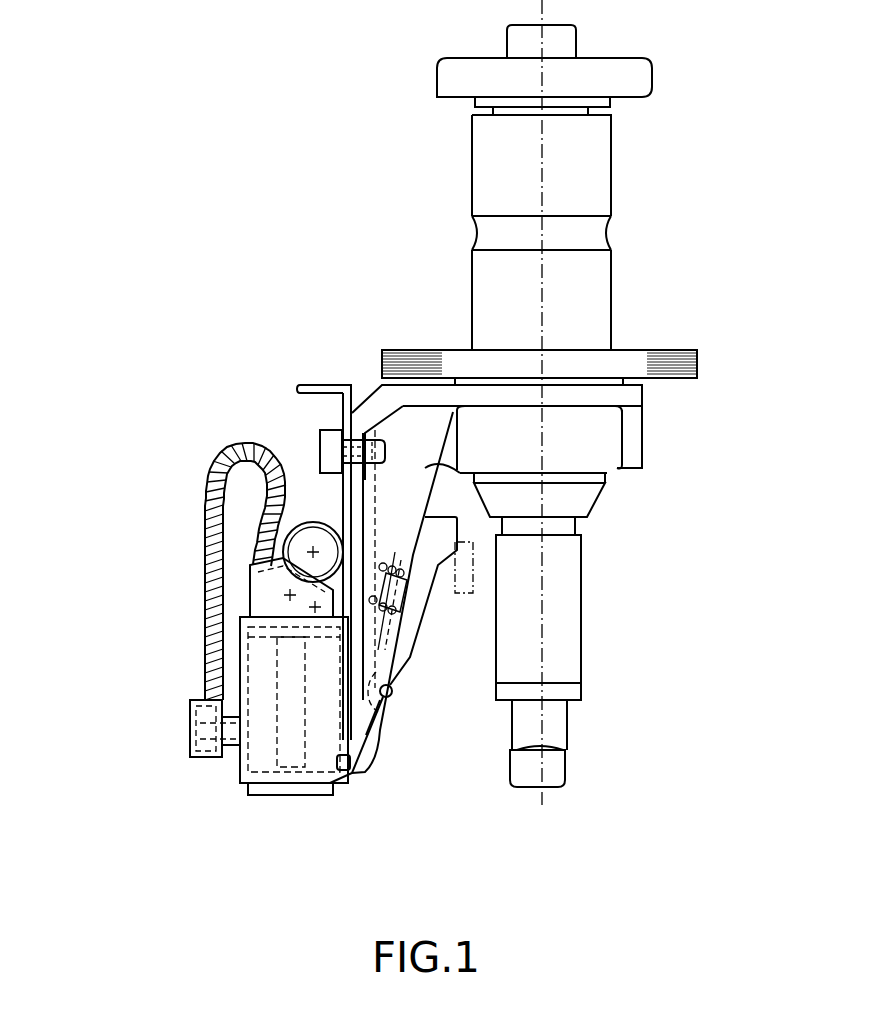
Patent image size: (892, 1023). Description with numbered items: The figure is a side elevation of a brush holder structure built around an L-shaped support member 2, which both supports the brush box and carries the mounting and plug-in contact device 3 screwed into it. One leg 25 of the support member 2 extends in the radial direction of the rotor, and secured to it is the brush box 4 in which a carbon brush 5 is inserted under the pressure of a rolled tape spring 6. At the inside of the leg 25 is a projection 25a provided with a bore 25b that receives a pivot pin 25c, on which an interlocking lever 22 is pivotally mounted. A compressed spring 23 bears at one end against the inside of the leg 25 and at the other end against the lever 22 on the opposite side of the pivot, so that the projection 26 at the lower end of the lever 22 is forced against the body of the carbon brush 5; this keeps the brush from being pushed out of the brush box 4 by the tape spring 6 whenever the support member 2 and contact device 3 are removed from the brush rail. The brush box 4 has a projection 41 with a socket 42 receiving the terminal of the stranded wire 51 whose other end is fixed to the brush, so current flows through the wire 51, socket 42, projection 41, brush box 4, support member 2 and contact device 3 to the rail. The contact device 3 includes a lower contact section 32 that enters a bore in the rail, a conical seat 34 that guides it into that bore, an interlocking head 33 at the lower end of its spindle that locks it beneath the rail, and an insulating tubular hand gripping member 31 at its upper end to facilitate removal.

The support member 2 is at (590, 428).
The plug-in contact device 3 is at (542, 285).
The hand gripping member 31 is at (497, 287).
The lower contact section 32 is at (565, 610).
The interlocking head 33 is at (550, 765).
The conical seat 34 is at (600, 500).
The brush box 4 is at (240, 643).
The projection 41 is at (233, 755).
The socket 42 is at (195, 707).
The carbon brush 5 is at (268, 772).
The stranded wire 51 is at (207, 497).
The rolled tape spring 6 is at (312, 522).
The interlocking lever 22 is at (380, 732).
The compressed spring 23 is at (391, 565).
The leg 25 is at (365, 493).
The projection 25a is at (384, 705).
The bore 25b is at (392, 691).
The pivot pin 25c is at (392, 697).
The projection 26 is at (353, 778).